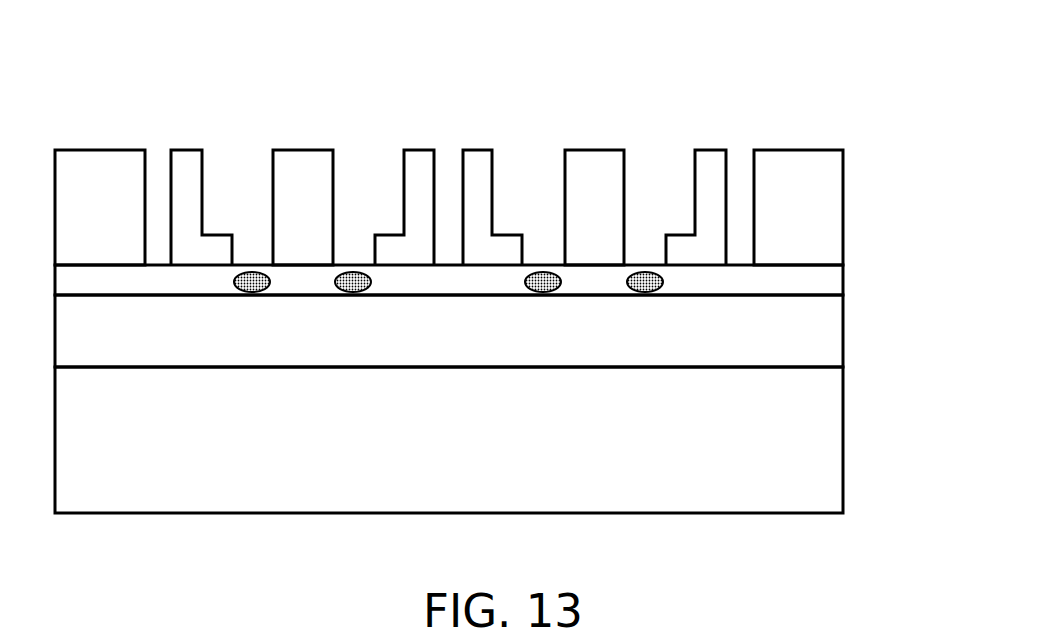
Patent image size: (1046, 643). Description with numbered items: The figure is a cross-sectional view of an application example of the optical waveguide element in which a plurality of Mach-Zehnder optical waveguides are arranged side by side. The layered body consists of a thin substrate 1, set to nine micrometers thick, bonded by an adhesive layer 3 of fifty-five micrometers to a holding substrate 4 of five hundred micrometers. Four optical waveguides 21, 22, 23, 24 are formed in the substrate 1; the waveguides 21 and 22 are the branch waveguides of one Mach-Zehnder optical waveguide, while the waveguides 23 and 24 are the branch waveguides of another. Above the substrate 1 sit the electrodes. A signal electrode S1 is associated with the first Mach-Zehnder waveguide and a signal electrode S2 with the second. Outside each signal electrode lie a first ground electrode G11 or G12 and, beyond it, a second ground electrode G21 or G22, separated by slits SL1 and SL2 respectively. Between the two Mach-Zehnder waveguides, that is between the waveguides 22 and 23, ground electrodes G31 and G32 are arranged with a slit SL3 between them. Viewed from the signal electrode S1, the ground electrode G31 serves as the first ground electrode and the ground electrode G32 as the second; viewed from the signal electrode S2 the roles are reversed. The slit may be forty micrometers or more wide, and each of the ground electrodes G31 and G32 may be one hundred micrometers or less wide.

The substrate 1 is at (775, 278).
The adhesive layer 3 is at (775, 336).
The holding substrate 4 is at (775, 441).
The optical waveguide 21 is at (252, 292).
The optical waveguide 22 is at (353, 292).
The optical waveguide 23 is at (543, 292).
The optical waveguide 24 is at (645, 292).
The first ground electrode G11 is at (182, 178).
The first ground electrode G12 is at (707, 167).
The second ground electrode G21 is at (99, 177).
The second ground electrode G22 is at (793, 172).
The ground electrode G31 is at (415, 173).
The ground electrode G32 is at (476, 173).
The signal electrode S1 is at (287, 172).
The signal electrode S2 is at (578, 173).
The slit SL1 is at (161, 265).
The slit SL2 is at (740, 265).
The slit SL3 is at (450, 265).